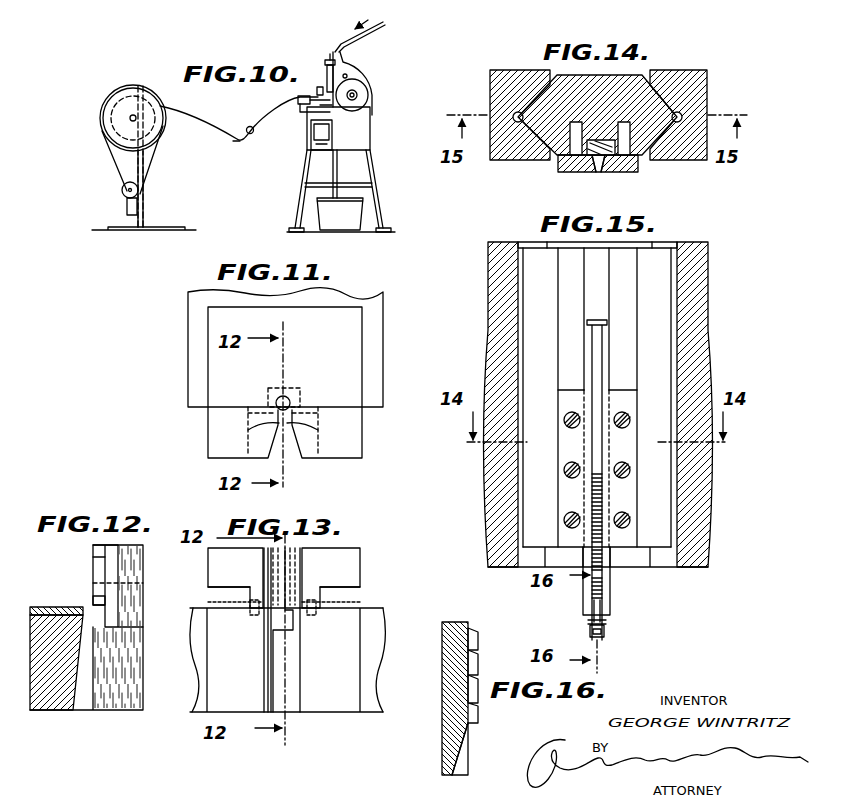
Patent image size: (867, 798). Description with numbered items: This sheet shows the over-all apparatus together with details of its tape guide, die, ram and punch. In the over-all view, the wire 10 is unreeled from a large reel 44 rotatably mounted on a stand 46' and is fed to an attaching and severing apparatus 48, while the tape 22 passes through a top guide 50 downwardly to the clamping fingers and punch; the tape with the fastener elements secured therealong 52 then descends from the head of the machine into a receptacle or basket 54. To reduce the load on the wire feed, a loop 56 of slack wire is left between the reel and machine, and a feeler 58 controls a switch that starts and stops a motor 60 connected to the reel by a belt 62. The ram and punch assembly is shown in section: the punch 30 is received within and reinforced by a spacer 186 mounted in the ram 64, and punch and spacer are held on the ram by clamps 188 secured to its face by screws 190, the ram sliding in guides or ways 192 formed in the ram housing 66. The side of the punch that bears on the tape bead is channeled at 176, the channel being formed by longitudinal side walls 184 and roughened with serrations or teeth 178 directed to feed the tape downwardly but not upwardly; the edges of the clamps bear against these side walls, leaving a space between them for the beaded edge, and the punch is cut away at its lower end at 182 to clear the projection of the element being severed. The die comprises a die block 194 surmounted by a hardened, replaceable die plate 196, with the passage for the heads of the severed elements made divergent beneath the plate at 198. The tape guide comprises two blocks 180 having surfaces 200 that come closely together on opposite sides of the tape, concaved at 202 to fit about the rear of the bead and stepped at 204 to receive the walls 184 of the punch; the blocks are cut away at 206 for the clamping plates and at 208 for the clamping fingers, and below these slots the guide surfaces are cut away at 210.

In FIG. 10, the wire 10 is at (193, 113).
In FIG. 10, the tape 22 is at (379, 28).
In FIG. 14, the punch 30 is at (598, 165).
In FIG. 15, the punch 30 is at (590, 630).
In FIG. 16, the punch 30 is at (452, 743).
In FIG. 10, the reel 44 is at (125, 99).
In FIG. 10, the stand 46' is at (144, 158).
In FIG. 10, the attaching and severing apparatus 48 is at (376, 116).
In FIG. 10, the top guide 50 is at (350, 58).
In FIG. 10, the tape with fastener elements secured therealong 52 is at (340, 167).
In FIG. 10, the receptacle or basket 54 is at (343, 220).
In FIG. 10, the loop of slack wire 56 is at (237, 140).
In FIG. 10, the feeler 58 is at (250, 126).
In FIG. 10, the motor 60 is at (127, 207).
In FIG. 10, the belt 62 is at (110, 163).
In FIG. 14, the ram 64 is at (601, 78).
In FIG. 15, the ram 64 is at (620, 268).
In FIG. 14, the ram housing 66 is at (613, 105).
In FIG. 15, the ram housing 66 is at (612, 396).
In FIG. 15, the channel 176 is at (605, 606).
In FIG. 16, the channel 176 is at (474, 649).
In FIG. 15, the serrations or teeth 178 is at (604, 488).
In FIG. 16, the serrations or teeth 178 is at (476, 670).
In FIG. 11, the blocks 180 is at (215, 452).
In FIG. 13, the blocks 180 is at (215, 569).
In FIG. 15, the cut-away at lower end of punch 182 is at (603, 640).
In FIG. 16, the cut-away at lower end of punch 182 is at (462, 760).
In FIG. 15, the side walls 184 is at (590, 622).
In FIG. 16, the side walls 184 is at (478, 711).
In FIG. 14, the spacer 186 is at (628, 121).
In FIG. 15, the spacer 186 is at (606, 332).
In FIG. 14, the clamps 188 is at (575, 173).
In FIG. 15, the clamps 188 is at (568, 445).
In FIG. 15, the screws 190 is at (564, 418).
In FIG. 14, the guides or ways 192 is at (540, 95).
In FIG. 15, the guides or ways 192 is at (533, 246).
In FIG. 12, the die block 194 is at (47, 706).
In FIG. 11, the die plate 196 is at (352, 350).
In FIG. 12, the die plate 196 is at (52, 607).
In FIG. 12, the divergent passage 198 is at (82, 706).
In FIG. 11, the surfaces 200 is at (270, 428).
In FIG. 12, the surfaces 200 is at (119, 559).
In FIG. 11, the concave portions 202 is at (262, 413).
In FIG. 12, the concave portions 202 is at (97, 550).
In FIG. 11, the step or recess 204 is at (275, 399).
In FIG. 12, the step or recess 204 is at (93, 557).
In FIG. 12, the cut-away for clamping plates 206 is at (133, 598).
In FIG. 13, the cut-away for clamping plates 206 is at (229, 595).
In FIG. 12, the cut-away for clamping fingers 208 is at (93, 601).
In FIG. 13, the cut-away for clamping fingers 208 is at (252, 615).
In FIG. 12, the cut-away tape guide surfaces 210 is at (125, 705).
In FIG. 13, the cut-away tape guide surfaces 210 is at (285, 697).